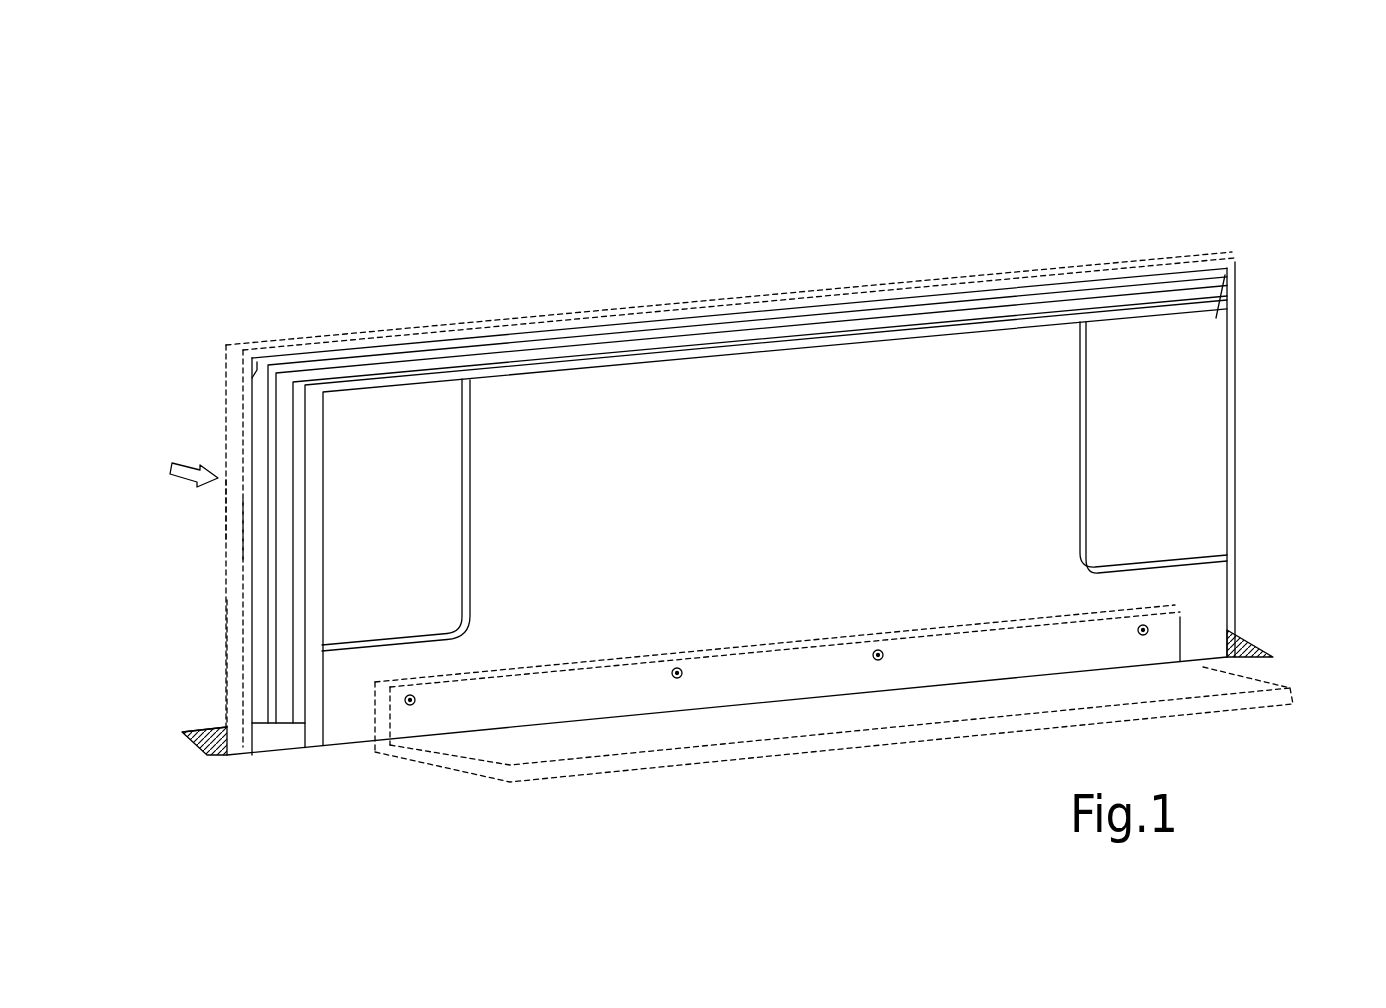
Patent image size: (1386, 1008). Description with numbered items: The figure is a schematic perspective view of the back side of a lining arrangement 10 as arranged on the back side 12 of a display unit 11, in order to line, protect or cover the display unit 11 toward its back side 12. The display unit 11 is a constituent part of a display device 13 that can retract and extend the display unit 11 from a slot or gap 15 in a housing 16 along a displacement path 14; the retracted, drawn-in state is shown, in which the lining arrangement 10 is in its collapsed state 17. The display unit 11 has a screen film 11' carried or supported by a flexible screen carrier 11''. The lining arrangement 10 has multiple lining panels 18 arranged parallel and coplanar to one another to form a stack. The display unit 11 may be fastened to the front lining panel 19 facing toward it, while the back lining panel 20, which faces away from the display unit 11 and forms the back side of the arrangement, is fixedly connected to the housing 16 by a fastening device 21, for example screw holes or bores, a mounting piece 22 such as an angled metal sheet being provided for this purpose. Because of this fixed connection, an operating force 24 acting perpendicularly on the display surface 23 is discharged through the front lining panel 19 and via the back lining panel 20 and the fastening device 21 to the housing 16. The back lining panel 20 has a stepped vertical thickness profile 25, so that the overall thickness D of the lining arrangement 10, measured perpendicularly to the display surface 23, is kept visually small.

The lining arrangement 10 is at (491, 136).
The display unit 11 is at (694, 489).
The screen film 11' is at (172, 510).
The flexible screen carrier 11'' is at (179, 533).
The back side 12 is at (254, 376).
The display device 13 is at (224, 604).
The displacement path 14 is at (316, 127).
The slot or gap 15 is at (204, 724).
The housing 16 is at (183, 711).
The collapsed state 17 is at (968, 270).
The lining panels 18 is at (1203, 267).
The front lining panel 19 is at (413, 329).
The back lining panel 20 is at (1205, 428).
The fastening device 21 is at (672, 671).
The mounting piece 22 is at (1258, 676).
The display surface 23 is at (242, 414).
The operating force 24 is at (170, 460).
The stepped thickness profile 25 is at (459, 600).
The overall thickness D is at (1300, 597).